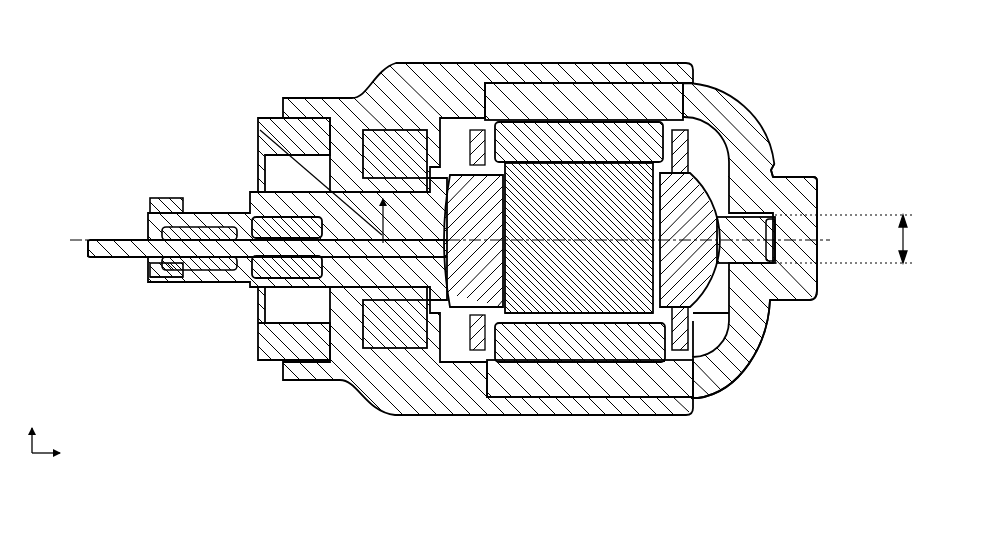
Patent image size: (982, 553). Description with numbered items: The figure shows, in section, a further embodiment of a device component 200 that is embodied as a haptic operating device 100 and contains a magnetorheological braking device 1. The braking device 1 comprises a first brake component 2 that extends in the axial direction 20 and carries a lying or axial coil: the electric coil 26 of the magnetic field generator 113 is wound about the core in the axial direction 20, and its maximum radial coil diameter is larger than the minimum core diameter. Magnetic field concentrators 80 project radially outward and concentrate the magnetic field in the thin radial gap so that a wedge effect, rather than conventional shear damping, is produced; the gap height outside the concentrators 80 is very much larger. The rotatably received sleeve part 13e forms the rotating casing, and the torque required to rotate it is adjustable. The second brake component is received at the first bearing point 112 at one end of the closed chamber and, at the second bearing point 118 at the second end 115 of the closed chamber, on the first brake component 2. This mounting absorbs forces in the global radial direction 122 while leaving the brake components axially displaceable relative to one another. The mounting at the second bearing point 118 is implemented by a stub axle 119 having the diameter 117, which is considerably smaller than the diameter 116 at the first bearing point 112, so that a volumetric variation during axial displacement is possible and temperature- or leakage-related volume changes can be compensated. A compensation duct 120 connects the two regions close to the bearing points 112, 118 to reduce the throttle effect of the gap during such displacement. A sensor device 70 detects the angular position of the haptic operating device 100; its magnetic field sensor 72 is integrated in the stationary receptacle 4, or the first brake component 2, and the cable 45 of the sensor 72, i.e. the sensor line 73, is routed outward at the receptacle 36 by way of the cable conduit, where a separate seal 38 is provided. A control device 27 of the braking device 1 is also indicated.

The device component 200 is at (467, 276).
The haptic operating device 100 is at (467, 276).
The magnetorheological braking device 1 is at (224, 72).
The seal 38 is at (397, 160).
The magnetic field concentrator 80 is at (486, 84).
The diameter of first bearing point 116 is at (256, 126).
The receptacle 4 is at (250, 212).
The receptacle 36 is at (178, 194).
The control device 27 is at (176, 240).
The cable 45 is at (178, 265).
The magnetic field sensor 72 is at (250, 247).
The sensor line 73 is at (120, 256).
The sensor device 70 is at (246, 360).
The first bearing point 112 is at (363, 328).
The electric coil 26 is at (470, 292).
The compensation duct 120 is at (521, 320).
The first brake component 2 is at (612, 310).
The magnetic field generator 113 is at (704, 324).
The second end of the closed chamber 115 is at (768, 313).
The sleeve part 13e is at (770, 303).
The stub axle 119 is at (820, 297).
The diameter of second bearing point 117 is at (900, 240).
The second bearing point 118 is at (775, 176).
The radial direction (global) 122 is at (36, 436).
The axial direction 20 is at (48, 456).